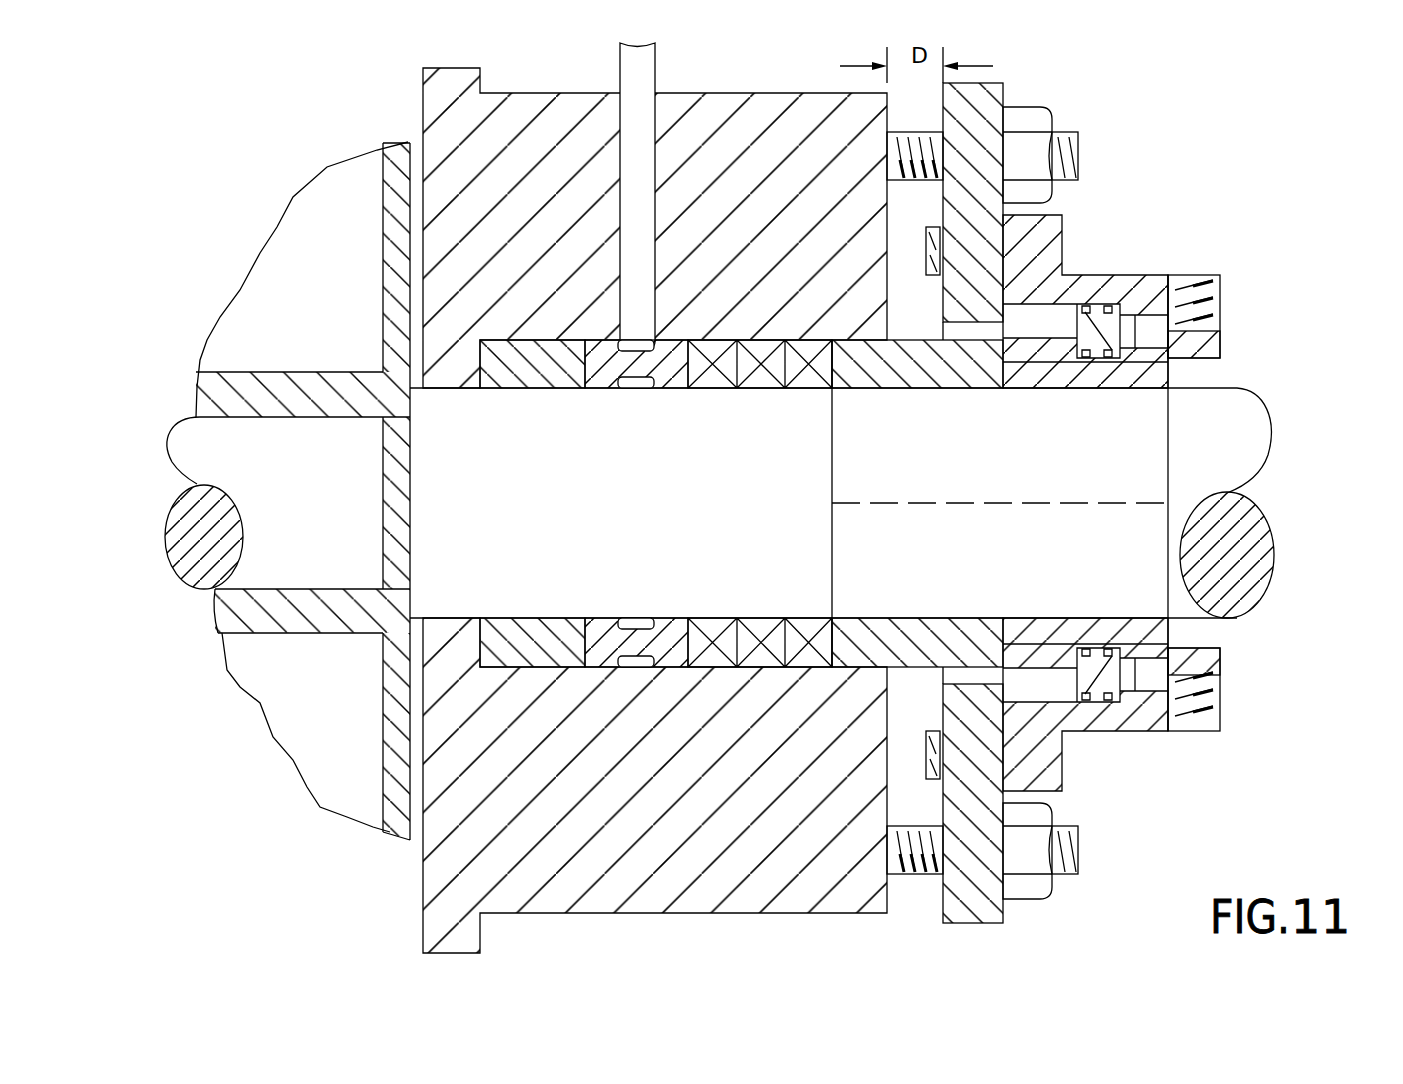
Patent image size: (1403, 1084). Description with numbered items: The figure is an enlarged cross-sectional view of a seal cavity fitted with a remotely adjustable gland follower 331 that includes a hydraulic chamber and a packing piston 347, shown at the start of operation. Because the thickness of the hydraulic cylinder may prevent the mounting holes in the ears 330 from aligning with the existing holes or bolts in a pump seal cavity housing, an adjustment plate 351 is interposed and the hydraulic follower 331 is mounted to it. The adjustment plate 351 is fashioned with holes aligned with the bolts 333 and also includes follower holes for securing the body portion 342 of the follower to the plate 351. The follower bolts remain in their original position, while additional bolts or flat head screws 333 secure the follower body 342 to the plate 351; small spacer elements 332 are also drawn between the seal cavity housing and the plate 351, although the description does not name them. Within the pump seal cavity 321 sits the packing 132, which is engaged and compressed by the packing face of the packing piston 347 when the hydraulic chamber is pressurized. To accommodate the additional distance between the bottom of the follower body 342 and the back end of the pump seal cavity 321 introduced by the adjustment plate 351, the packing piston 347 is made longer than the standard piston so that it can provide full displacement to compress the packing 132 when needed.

The packing 132 is at (807, 628).
The pump seal cavity 321 is at (892, 705).
The ears 330 is at (1148, 257).
The remotely adjustable gland follower 331 is at (1050, 768).
The spacer 332 is at (940, 232).
The bolts 333 is at (1067, 842).
The follower body 342 is at (1150, 418).
The packing piston 347 is at (958, 570).
The adjustment plate 351 is at (982, 912).